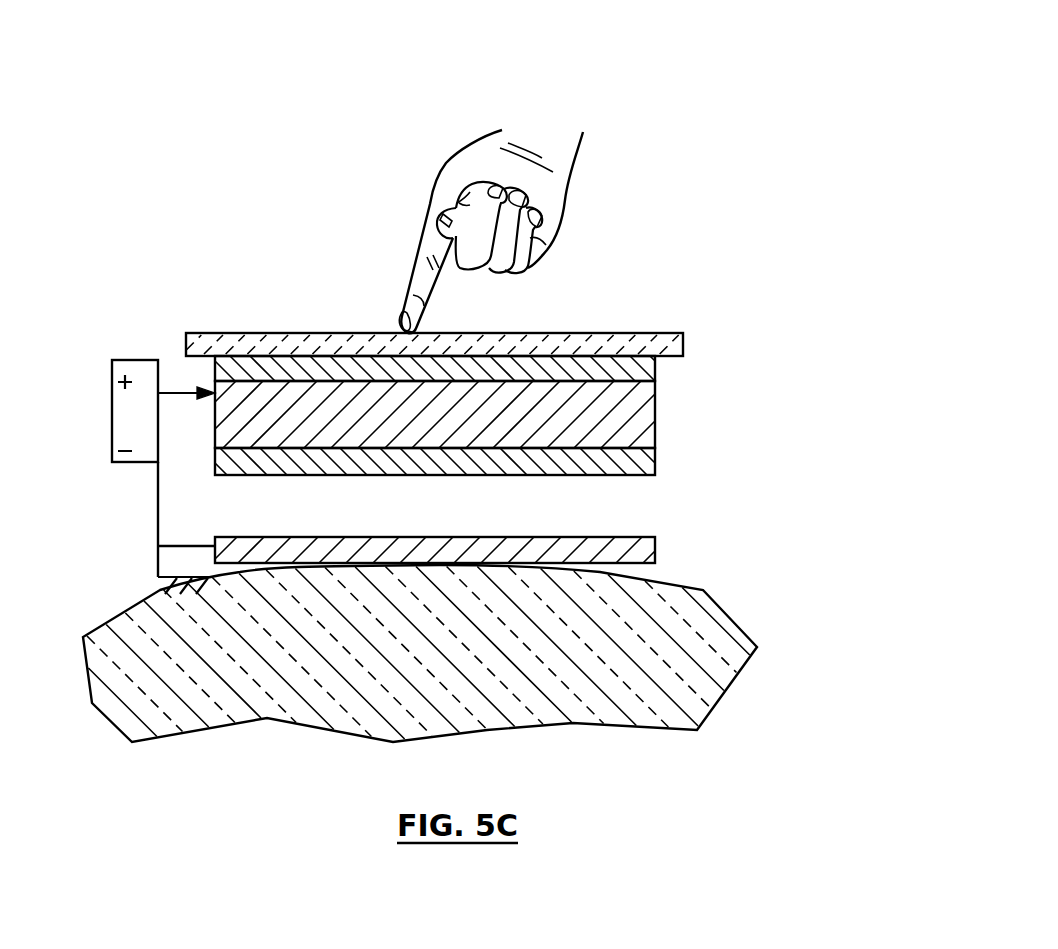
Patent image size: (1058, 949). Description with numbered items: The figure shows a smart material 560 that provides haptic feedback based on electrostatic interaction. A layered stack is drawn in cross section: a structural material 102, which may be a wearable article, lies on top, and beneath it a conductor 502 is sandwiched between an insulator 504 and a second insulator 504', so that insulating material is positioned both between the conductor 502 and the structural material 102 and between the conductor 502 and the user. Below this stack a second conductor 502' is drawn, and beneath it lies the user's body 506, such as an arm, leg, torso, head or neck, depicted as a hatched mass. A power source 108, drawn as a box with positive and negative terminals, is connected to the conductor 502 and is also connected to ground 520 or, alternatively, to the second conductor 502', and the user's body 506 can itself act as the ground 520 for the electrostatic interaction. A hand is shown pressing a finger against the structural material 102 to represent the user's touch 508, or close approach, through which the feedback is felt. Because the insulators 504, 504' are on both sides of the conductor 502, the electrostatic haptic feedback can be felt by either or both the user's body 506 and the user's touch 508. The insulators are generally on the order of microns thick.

The smart material 560 is at (637, 135).
The user's touch 508 is at (402, 307).
The structural material 102 is at (252, 340).
The insulator 504 is at (519, 361).
The conductor 502 is at (519, 414).
The insulator 504' is at (523, 458).
The second conductor 502' is at (523, 549).
The power source 108 is at (128, 358).
The ground 520 is at (207, 585).
The user's body 506 is at (732, 692).